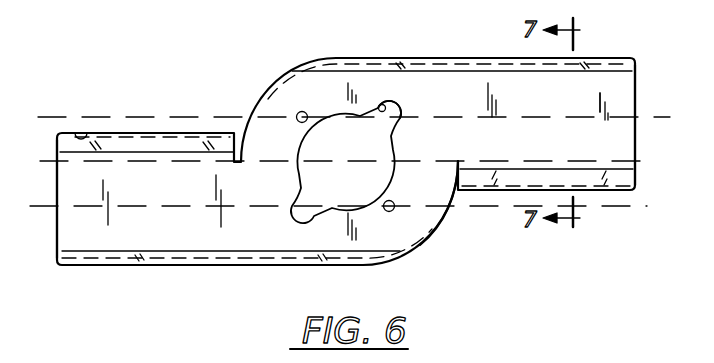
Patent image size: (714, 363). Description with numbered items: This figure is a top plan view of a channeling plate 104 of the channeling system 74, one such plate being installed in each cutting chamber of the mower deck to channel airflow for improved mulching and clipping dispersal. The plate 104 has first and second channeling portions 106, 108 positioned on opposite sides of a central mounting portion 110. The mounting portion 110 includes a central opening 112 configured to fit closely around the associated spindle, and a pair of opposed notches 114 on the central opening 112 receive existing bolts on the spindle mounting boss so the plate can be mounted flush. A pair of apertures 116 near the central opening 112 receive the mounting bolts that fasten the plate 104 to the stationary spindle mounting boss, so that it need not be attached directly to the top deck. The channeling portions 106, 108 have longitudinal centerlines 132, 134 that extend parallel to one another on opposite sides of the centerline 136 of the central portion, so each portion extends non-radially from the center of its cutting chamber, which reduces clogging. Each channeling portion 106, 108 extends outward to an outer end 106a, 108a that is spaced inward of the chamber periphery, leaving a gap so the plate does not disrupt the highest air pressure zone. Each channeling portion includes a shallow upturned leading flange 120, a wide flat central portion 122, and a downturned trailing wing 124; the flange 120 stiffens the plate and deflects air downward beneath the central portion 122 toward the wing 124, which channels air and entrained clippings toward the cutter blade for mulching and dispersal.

The channeling system 74 is at (452, 250).
The channeling plate 104 is at (263, 88).
The first channeling portion 106 is at (107, 236).
The outer end 106a is at (58, 240).
The second channeling portion 108 is at (633, 89).
The outer end 108a is at (610, 107).
The central mounting portion 110 is at (313, 108).
The central opening 112 is at (370, 190).
The notch 114 is at (381, 104).
The aperture 116 is at (297, 115).
The upturned leading flange 120 is at (470, 27).
The central portion 122 is at (101, 183).
The downturned trailing wing 124 is at (76, 133).
The longitudinal centerline 132 is at (666, 204).
The longitudinal centerline 134 is at (38, 117).
The centerline of the central portion 136 is at (654, 158).